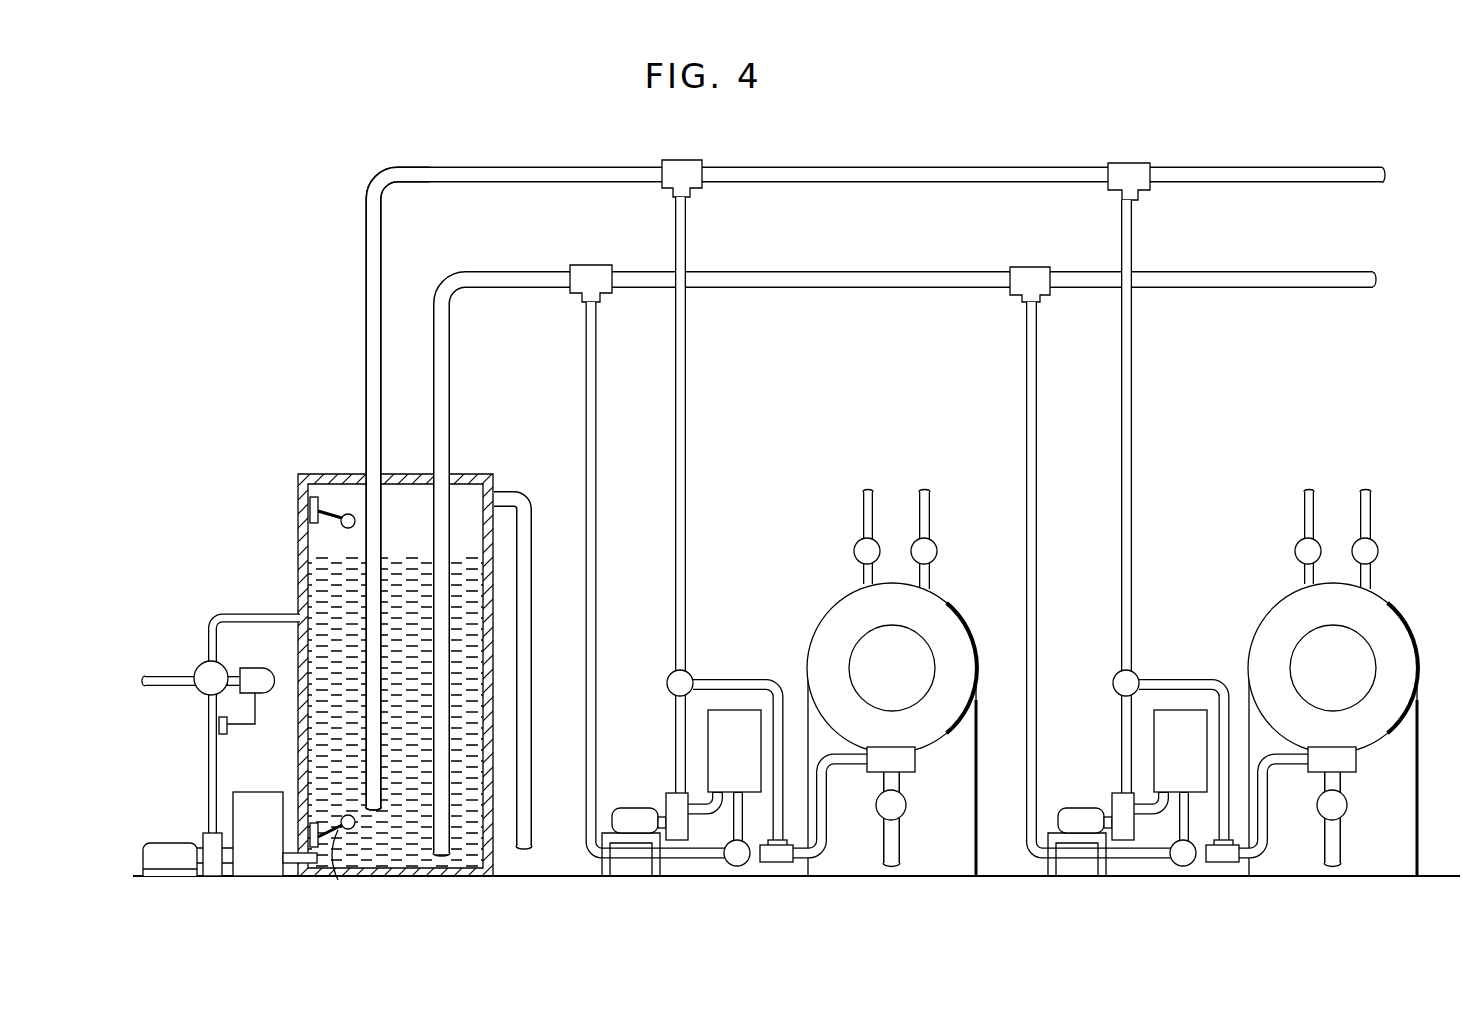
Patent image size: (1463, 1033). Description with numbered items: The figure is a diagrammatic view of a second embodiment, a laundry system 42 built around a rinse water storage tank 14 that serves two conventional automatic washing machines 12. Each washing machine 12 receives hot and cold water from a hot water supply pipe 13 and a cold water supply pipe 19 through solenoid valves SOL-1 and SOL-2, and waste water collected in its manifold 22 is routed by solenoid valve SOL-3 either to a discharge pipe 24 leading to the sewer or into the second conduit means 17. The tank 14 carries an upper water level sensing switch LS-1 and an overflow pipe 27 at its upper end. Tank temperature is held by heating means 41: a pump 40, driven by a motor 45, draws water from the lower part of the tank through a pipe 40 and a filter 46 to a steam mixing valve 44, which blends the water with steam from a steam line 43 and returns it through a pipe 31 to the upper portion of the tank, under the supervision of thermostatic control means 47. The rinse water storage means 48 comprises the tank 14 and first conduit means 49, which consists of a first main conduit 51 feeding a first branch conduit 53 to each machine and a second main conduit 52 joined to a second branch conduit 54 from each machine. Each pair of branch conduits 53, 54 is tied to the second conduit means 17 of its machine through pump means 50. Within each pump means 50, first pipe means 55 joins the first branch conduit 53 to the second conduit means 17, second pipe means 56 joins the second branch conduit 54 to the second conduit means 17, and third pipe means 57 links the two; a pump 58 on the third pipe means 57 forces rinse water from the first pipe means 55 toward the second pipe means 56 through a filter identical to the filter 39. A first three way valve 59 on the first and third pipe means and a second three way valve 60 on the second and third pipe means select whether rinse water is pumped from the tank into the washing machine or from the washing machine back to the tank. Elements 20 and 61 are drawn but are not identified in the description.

The automatic washing machine 12 is at (841, 612).
The hot water supply pipe 13 is at (863, 508).
The rinse water storage tank 14 is at (339, 474).
The second conduit means 17 is at (859, 780).
The cold water supply pipe 19 is at (929, 505).
The drain outlet 20 is at (875, 855).
The manifold 22 is at (914, 760).
The discharge pipe 24 is at (899, 850).
The overflow pipe 27 is at (533, 775).
The pipe 31 is at (236, 614).
The filter 39 is at (729, 718).
The pump 40 is at (203, 837).
The heating means 41 is at (226, 721).
The laundry system 42 is at (1118, 140).
The steam line 43 is at (163, 676).
The steam mixing valve 44 is at (204, 662).
The motor 45 is at (162, 850).
The filter 46 is at (255, 805).
The thermostatic control means 47 is at (263, 652).
The rinse water storage means 48 is at (352, 195).
The first conduit means 49 is at (854, 455).
The pump means 50 is at (712, 652).
The first main conduit 51 is at (443, 173).
The second main conduit 52 is at (508, 278).
The first branch conduit 53 is at (590, 335).
The second branch conduit 54 is at (682, 343).
The first pipe means 55 is at (764, 866).
The second pipe means 56 is at (788, 667).
The third pipe means 57 is at (708, 835).
The pump 58 is at (672, 798).
The first three way valve 59 is at (734, 868).
The second three way valve 60 is at (669, 679).
The pump 61 is at (623, 818).
The high water level switch LS-1 is at (322, 500).
The solenoid valve SOL-1 is at (857, 553).
The solenoid valve SOL-2 is at (935, 551).
The solenoid valve SOL-3 is at (902, 812).